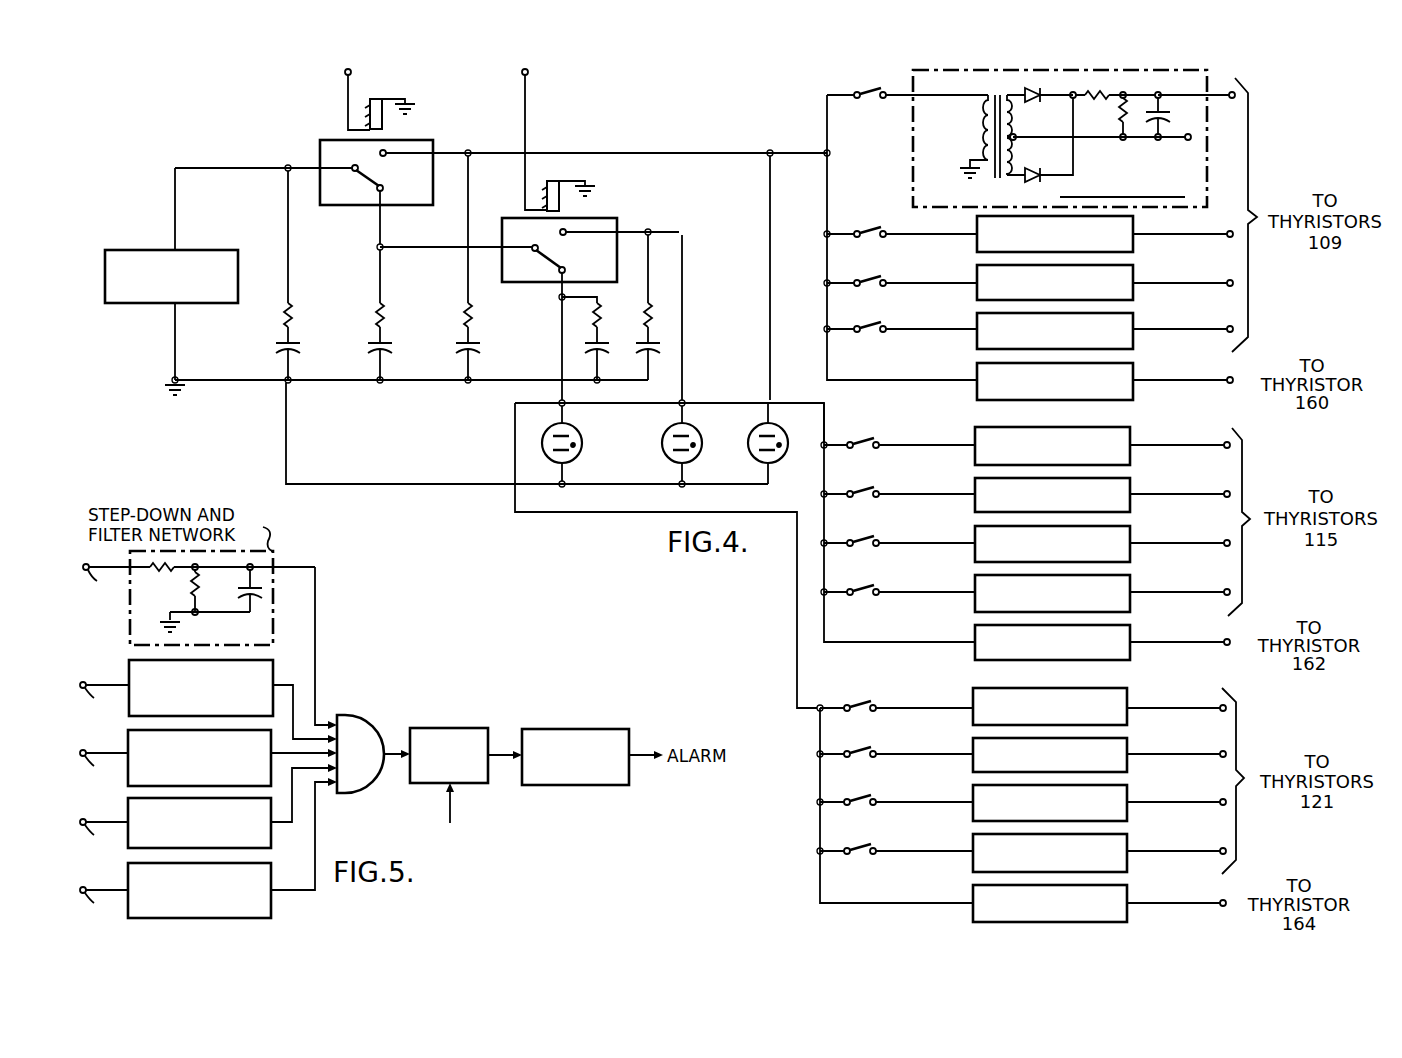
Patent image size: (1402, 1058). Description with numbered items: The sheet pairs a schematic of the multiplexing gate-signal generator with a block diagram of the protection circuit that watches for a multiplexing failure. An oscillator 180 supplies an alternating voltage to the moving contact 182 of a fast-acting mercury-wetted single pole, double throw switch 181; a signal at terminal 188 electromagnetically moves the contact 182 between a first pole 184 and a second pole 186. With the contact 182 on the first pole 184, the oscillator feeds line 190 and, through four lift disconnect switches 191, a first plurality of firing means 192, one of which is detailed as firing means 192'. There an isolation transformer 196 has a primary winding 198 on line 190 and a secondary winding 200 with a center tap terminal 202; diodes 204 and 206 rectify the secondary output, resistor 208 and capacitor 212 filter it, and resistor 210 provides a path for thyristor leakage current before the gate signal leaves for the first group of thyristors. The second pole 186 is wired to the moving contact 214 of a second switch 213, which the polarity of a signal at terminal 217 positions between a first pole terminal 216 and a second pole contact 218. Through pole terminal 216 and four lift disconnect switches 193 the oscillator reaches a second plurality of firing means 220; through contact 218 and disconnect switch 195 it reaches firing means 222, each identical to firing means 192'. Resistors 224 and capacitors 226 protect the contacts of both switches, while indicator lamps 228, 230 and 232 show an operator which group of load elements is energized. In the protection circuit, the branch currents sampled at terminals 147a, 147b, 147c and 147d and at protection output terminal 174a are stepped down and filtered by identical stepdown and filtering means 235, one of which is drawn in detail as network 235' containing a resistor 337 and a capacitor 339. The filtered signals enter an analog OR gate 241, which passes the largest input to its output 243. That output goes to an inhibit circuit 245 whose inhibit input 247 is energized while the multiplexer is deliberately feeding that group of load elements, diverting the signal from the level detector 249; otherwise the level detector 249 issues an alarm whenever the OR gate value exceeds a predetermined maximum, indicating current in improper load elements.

In FIG. 4, the oscillator 180 is at (145, 249).
In FIG. 4, the single pole, double throw switch 181 is at (445, 134).
In FIG. 4, the moving contact 182 is at (372, 180).
In FIG. 4, the first pole 184 is at (380, 153).
In FIG. 4, the second pole 186 is at (377, 189).
In FIG. 4, the terminal 188 is at (345, 72).
In FIG. 4, the line 190 is at (598, 153).
In FIG. 4, the lift disconnect switches 191 is at (868, 88).
In FIG. 4, the first plurality of firing means 192 is at (1105, 303).
In FIG. 4, the firing means 192' is at (1085, 128).
In FIG. 4, the lift disconnect switches 193 is at (870, 441).
In FIG. 4, the disconnect switch 195 is at (866, 704).
In FIG. 4, the isolation transformer 196 is at (1013, 91).
In FIG. 4, the primary winding 198 is at (984, 130).
In FIG. 4, the secondary winding 200 is at (1016, 116).
In FIG. 4, the center tap terminal 202 is at (1017, 141).
In FIG. 4, the diode 204 is at (1039, 90).
In FIG. 4, the diode 206 is at (1033, 184).
In FIG. 4, the resistor 208 is at (1098, 92).
In FIG. 4, the resistor 210 is at (1121, 115).
In FIG. 4, the capacitor 212 is at (1155, 128).
In FIG. 4, the second single-throw, double-pole switch 213 is at (633, 213).
In FIG. 4, the moving contact 214 is at (553, 259).
In FIG. 4, the first pole terminal 216 is at (560, 232).
In FIG. 4, the terminal 217 is at (529, 73).
In FIG. 4, the second pole contact 218 is at (559, 270).
In FIG. 4, the second plurality of firing means 220 is at (1131, 428).
In FIG. 4, the firing means 222 is at (1128, 691).
In FIG. 4, the resistors 224 is at (284, 323).
In FIG. 4, the capacitors 226 is at (279, 347).
In FIG. 4, the indicator lamp 228 is at (583, 448).
In FIG. 4, the indicator lamp 230 is at (700, 449).
In FIG. 4, the indicator lamp 232 is at (787, 448).
In FIG. 5, the terminal 147a is at (95, 584).
In FIG. 5, the terminal 147b is at (97, 702).
In FIG. 5, the terminal 147c is at (97, 771).
In FIG. 5, the terminal 147d is at (97, 838).
In FIG. 5, the protection output terminal 174a is at (96, 907).
In FIG. 5, the stepdown and filtering means 235 is at (174, 784).
In FIG. 5, the step-down and filter network 235' is at (195, 598).
In FIG. 5, the resistor 337 is at (187, 581).
In FIG. 5, the capacitor 339 is at (243, 593).
In FIG. 5, the analog OR gate 241 is at (353, 716).
In FIG. 5, the output 243 is at (383, 746).
In FIG. 5, the inhibit circuit 245 is at (446, 727).
In FIG. 5, the inhibit input 247 is at (454, 818).
In FIG. 5, the level detector 249 is at (580, 728).